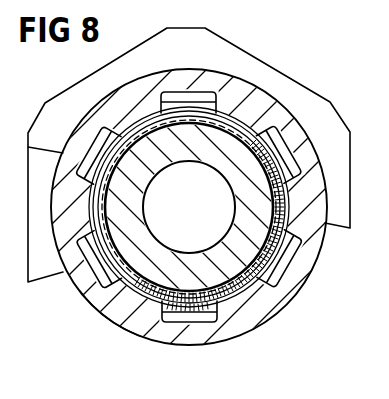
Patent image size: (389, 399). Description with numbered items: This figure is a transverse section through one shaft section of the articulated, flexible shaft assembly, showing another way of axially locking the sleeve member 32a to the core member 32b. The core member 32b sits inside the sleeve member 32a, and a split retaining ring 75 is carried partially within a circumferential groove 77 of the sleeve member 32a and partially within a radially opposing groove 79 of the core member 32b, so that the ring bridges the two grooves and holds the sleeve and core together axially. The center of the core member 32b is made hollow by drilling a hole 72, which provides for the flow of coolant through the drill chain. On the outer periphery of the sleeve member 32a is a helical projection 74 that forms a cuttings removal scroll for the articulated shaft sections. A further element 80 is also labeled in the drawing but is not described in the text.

The helical projection 74 is at (215, 50).
The sleeve member 32a is at (242, 320).
The core member 32b is at (247, 212).
The hole 72 is at (160, 240).
The groove of core member 79 is at (253, 263).
The split retaining ring 75 is at (110, 258).
The circumferential groove 77 is at (123, 323).
The element 80 is at (279, 393).